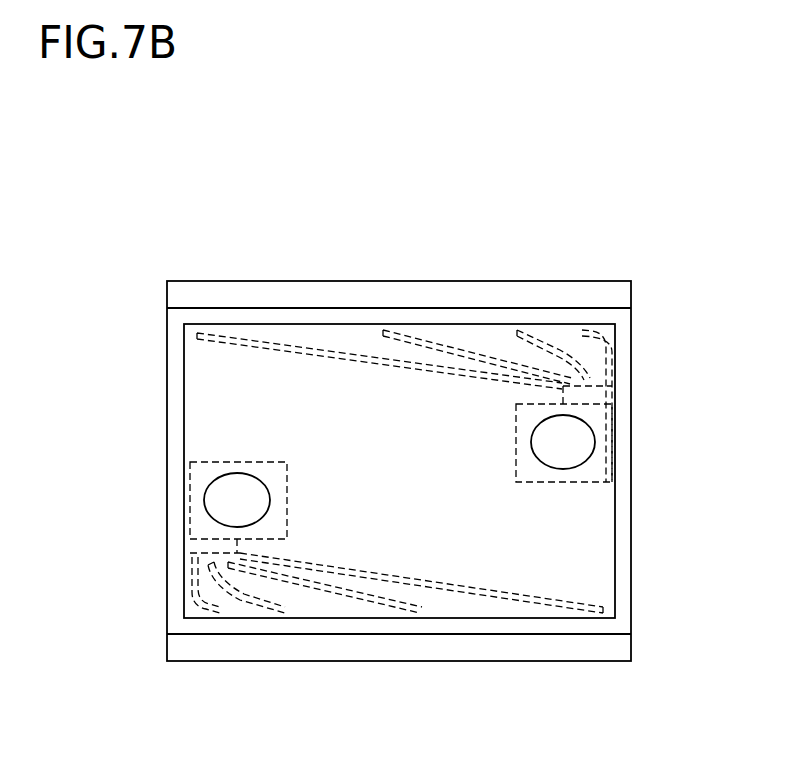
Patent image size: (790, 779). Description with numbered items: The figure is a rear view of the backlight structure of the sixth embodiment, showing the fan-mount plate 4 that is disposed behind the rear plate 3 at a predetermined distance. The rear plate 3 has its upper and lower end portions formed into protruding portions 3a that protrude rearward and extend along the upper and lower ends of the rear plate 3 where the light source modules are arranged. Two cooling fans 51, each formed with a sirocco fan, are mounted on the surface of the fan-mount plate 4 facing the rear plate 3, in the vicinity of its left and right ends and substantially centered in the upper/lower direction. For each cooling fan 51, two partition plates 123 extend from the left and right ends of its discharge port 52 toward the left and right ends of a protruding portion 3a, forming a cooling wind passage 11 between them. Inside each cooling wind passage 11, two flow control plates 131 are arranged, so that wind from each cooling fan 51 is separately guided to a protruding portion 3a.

The rear plate 3 is at (598, 663).
The protruding portion 3a is at (620, 294).
The fan-mount plate 4 is at (590, 555).
The cooling wind passage 11 is at (481, 332).
The cooling fan 51 is at (205, 468).
The discharge port 52 is at (205, 550).
The partition plate 123 is at (265, 333).
The flow control plate 131 is at (418, 332).